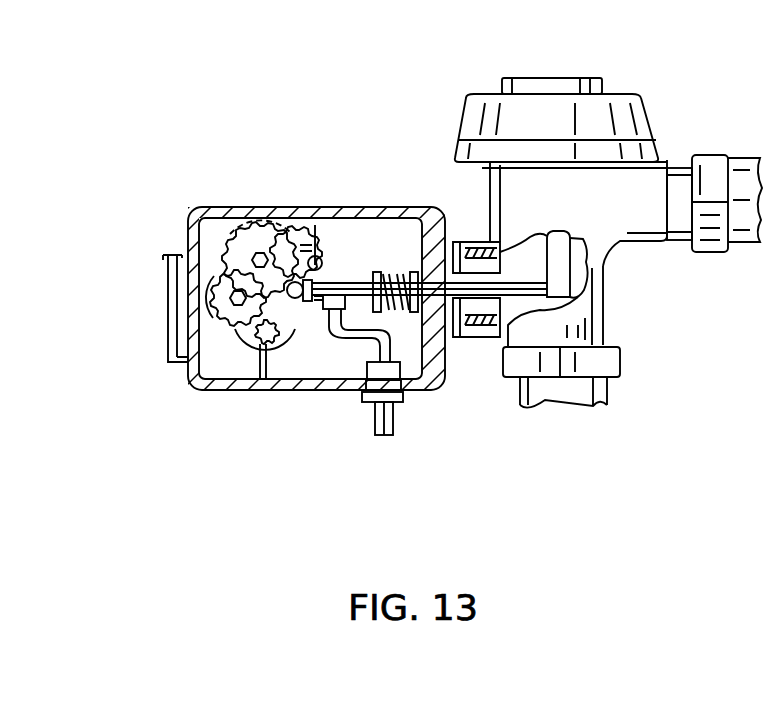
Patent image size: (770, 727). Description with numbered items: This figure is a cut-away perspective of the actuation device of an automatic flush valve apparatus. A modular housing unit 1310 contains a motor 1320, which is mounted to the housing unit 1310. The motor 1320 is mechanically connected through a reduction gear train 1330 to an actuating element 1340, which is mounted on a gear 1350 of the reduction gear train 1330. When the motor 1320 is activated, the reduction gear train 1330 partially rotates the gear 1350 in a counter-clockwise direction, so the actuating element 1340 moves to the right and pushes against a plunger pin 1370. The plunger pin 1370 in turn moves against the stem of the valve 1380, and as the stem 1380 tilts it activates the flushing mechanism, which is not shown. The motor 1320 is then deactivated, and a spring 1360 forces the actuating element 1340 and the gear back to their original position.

The modular housing unit 1310 is at (277, 208).
The motor 1320 is at (240, 392).
The reduction gear train 1330 is at (219, 244).
The actuating element 1340 is at (278, 332).
The gear 1350 is at (305, 224).
The spring 1360 is at (398, 325).
The plunger pin 1370 is at (352, 282).
The stem of the valve 1380 is at (560, 267).